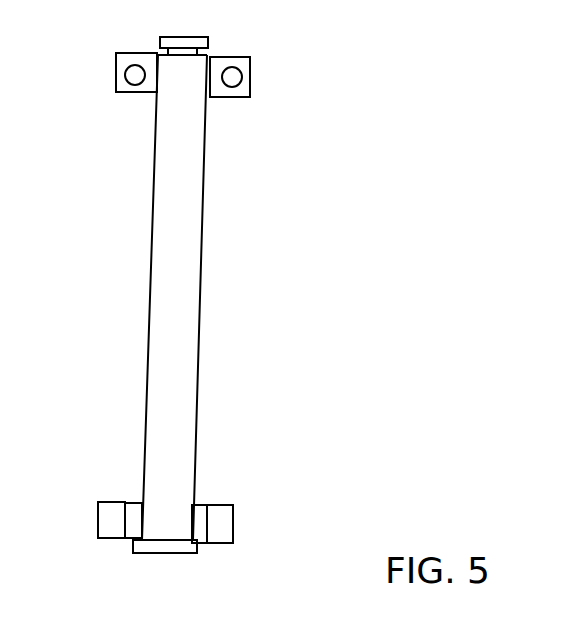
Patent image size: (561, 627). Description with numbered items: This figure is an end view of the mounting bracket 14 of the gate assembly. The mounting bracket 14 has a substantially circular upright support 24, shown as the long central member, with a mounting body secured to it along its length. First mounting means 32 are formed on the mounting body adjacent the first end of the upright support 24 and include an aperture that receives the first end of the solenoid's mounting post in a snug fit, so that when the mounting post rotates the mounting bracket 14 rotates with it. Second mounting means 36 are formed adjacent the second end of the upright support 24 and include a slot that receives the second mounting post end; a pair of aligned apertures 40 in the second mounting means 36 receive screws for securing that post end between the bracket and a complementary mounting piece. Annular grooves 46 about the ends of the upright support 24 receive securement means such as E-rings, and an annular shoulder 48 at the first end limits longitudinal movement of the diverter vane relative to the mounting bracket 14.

The mounting bracket 14 is at (247, 284).
The upright support 24 is at (192, 167).
The first mounting means 32 is at (223, 527).
The second mounting means 36 is at (127, 59).
The aligned apertures 40 is at (232, 78).
The annular grooves 46 is at (197, 53).
The annular shoulder 48 is at (178, 548).